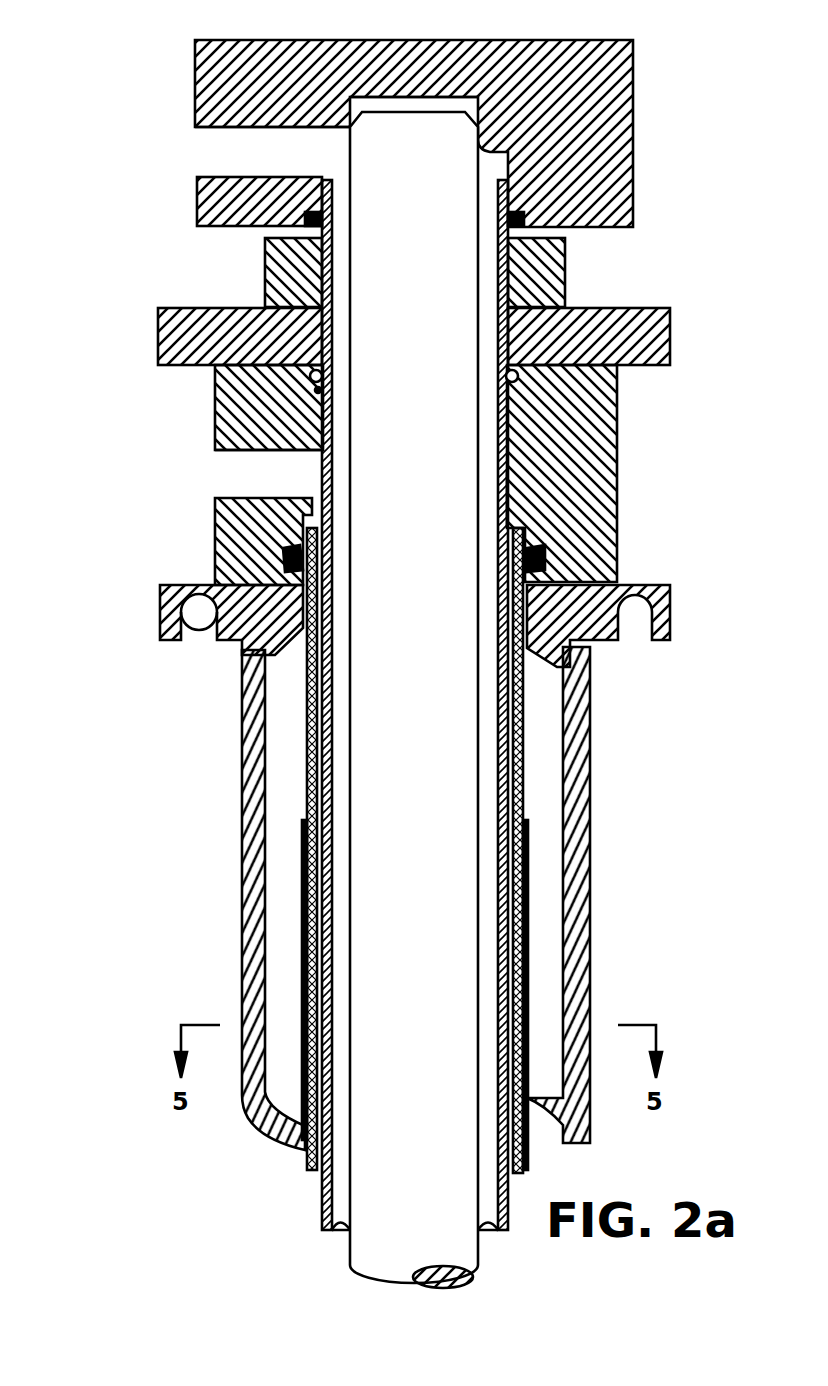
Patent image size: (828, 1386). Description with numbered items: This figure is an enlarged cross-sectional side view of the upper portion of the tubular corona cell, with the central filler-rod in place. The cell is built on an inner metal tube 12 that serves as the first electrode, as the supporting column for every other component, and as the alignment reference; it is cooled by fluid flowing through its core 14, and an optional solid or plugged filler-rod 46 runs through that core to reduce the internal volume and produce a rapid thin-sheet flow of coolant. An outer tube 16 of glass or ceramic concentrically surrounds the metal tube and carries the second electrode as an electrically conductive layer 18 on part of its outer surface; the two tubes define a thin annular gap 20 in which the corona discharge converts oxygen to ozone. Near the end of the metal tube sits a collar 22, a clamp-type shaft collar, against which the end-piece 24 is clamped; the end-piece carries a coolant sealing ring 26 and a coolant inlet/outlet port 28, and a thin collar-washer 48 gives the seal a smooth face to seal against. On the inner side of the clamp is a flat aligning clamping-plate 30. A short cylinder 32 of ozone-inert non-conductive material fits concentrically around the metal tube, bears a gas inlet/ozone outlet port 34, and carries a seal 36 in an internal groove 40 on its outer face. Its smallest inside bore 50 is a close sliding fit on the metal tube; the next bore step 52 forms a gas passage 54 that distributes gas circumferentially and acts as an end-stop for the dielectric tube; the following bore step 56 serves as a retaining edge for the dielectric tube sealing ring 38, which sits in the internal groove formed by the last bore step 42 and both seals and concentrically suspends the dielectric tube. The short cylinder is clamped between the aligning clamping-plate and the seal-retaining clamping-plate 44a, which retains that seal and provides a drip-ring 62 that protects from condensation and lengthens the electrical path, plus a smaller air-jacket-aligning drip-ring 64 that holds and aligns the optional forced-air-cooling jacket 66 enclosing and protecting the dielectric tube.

The inner metal tube 12 is at (508, 148).
The core 14 is at (500, 290).
The outer tube 16 is at (523, 780).
The electrically conductive layer 18 is at (523, 840).
The annular gap 20 is at (510, 935).
The collar 22 is at (265, 265).
The end-piece 24 is at (200, 62).
The coolant sealing ring 26 is at (305, 215).
The coolant inlet/outlet port 28 is at (210, 128).
The aligning clamping-plate 30 is at (160, 330).
The short cylinder 32 is at (215, 435).
The gas inlet/ozone outlet port 34 is at (258, 450).
The seal 36 is at (312, 378).
The internal groove 40 is at (320, 388).
The internal groove 42 is at (268, 548).
The dielectric tube sealing ring 38 is at (212, 590).
The seal-retaining clamping-plate 44a is at (160, 645).
The filler-rod 46 is at (420, 100).
The collar-washer 48 is at (565, 232).
The smallest inside bore 50 is at (520, 385).
The bore step 52 is at (525, 450).
The gas passage 54 is at (510, 492).
The bore step 56 is at (590, 590).
The drip-ring 62 is at (632, 640).
The air-jacket-aligning drip-ring 64 is at (582, 655).
The forced-air-cooling jacket 66 is at (245, 800).